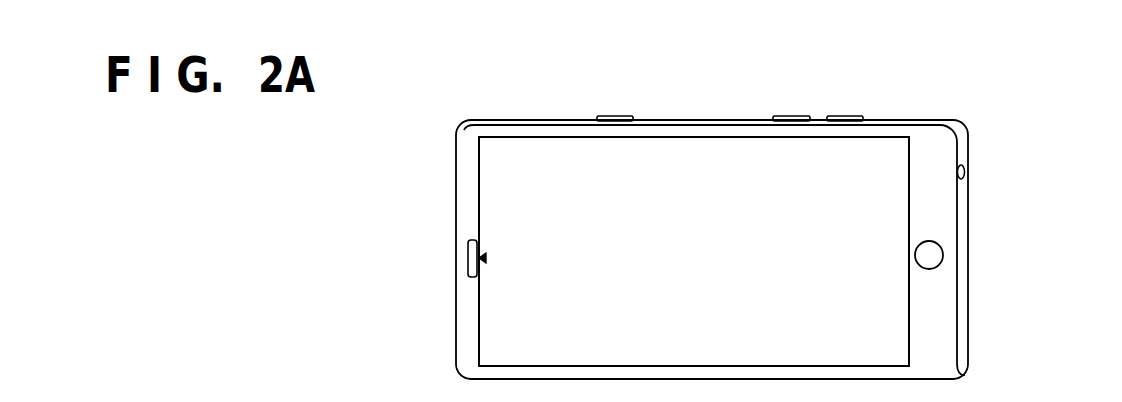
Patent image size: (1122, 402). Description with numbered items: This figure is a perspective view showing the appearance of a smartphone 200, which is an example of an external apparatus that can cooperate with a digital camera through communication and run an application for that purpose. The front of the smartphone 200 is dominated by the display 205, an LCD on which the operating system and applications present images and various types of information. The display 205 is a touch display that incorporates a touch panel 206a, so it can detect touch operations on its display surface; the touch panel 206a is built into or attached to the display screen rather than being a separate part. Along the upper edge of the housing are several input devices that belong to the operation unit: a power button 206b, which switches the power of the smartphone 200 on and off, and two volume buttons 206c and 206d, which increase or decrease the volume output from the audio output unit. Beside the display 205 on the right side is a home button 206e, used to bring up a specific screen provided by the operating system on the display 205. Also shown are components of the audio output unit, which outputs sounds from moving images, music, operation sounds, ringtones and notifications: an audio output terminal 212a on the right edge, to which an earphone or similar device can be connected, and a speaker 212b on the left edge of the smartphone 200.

The smartphone 200 is at (943, 333).
The display 205 is at (522, 162).
The touch panel 206a is at (522, 162).
The power button 206b is at (610, 115).
The volume button 206c is at (788, 115).
The volume button 206d is at (848, 115).
The home button 206e is at (935, 254).
The audio output terminal 212a is at (965, 168).
The speaker 212b is at (467, 258).